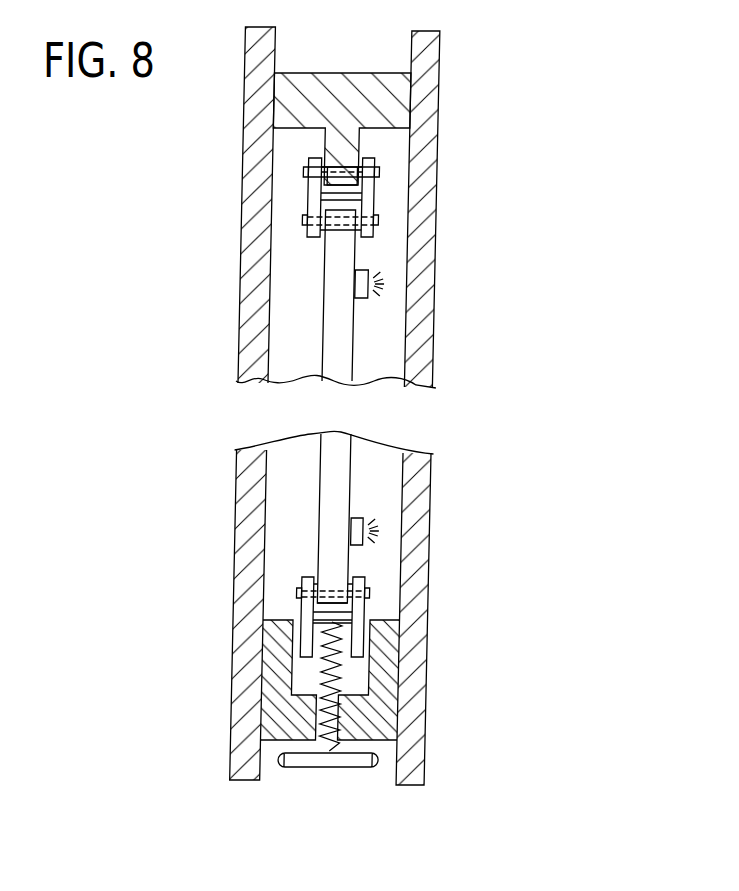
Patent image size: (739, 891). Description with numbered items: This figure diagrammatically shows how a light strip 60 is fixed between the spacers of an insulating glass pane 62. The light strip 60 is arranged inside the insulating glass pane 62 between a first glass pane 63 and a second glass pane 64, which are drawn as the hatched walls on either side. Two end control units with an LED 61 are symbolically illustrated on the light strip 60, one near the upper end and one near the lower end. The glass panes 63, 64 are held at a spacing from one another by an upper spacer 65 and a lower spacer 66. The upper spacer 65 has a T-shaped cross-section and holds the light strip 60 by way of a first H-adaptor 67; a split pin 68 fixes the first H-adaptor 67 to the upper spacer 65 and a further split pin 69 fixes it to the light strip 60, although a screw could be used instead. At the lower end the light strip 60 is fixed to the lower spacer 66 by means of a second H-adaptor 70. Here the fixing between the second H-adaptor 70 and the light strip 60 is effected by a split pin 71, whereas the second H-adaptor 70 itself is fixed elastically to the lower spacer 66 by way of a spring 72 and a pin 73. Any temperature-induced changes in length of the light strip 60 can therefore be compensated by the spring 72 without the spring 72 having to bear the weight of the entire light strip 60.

The light strip 60 is at (341, 485).
The LED 61 is at (369, 297).
The insulating glass pane 62 is at (542, 330).
The first glass pane 63 is at (385, 655).
The second glass pane 64 is at (248, 547).
The upper spacer 65 is at (348, 98).
The lower spacer 66 is at (277, 733).
The first H-adaptor 67 is at (374, 198).
The split pin 68 is at (379, 172).
The split pin 69 is at (378, 220).
The second H-adaptor 70 is at (300, 608).
The split pin 71 is at (369, 594).
The spring 72 is at (333, 686).
The pin 73 is at (358, 767).